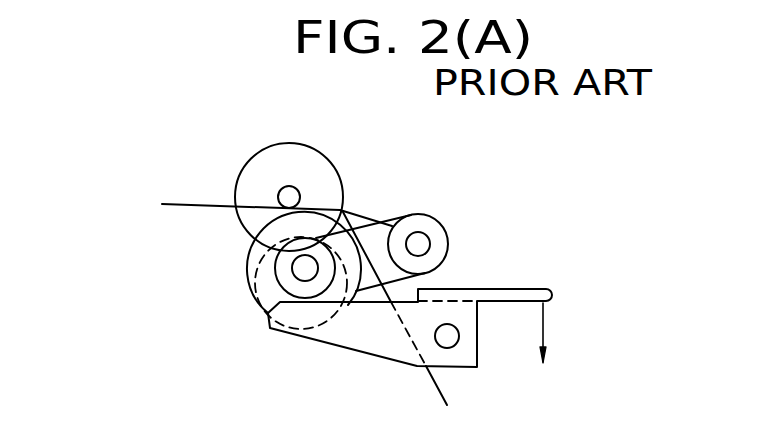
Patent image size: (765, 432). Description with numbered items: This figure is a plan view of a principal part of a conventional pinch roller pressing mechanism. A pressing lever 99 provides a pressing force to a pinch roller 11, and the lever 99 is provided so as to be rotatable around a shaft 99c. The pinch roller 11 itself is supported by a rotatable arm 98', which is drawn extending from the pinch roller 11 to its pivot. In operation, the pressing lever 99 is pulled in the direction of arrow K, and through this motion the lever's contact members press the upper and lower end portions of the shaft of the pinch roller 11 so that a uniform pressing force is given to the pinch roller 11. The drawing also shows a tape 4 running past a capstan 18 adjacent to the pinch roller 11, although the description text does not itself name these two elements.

The magnetic tape 4 is at (196, 203).
The capstan 18 is at (291, 186).
The pinch roller 11 is at (250, 267).
The rotatable arm 98' is at (382, 214).
The pressing lever 99 is at (323, 336).
The shaft 99c is at (447, 336).
The arrow K is at (555, 333).